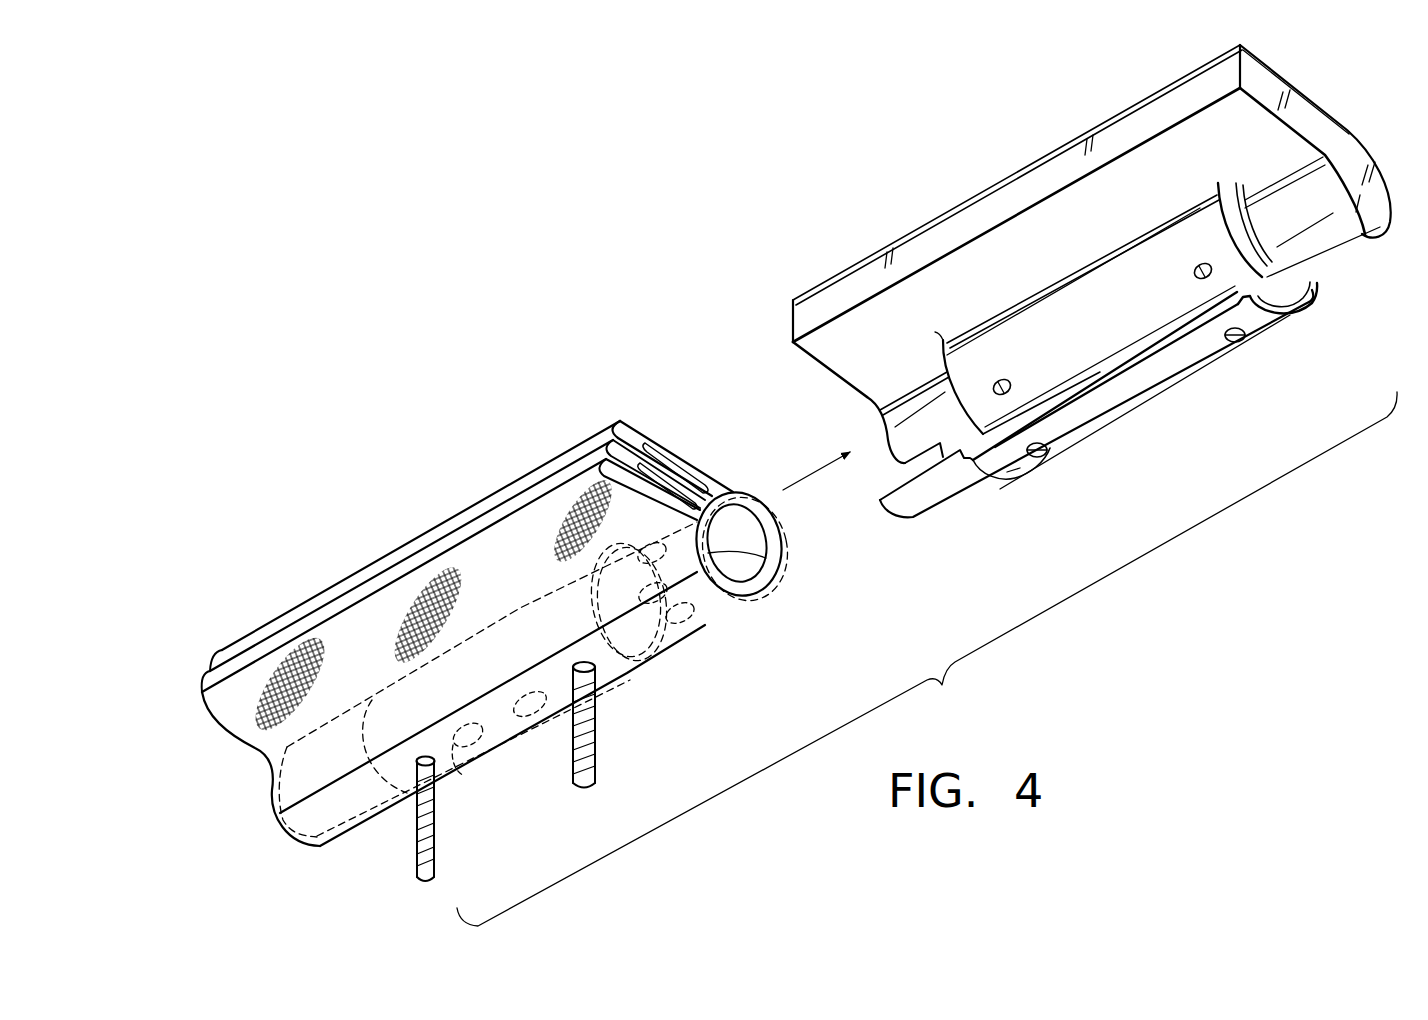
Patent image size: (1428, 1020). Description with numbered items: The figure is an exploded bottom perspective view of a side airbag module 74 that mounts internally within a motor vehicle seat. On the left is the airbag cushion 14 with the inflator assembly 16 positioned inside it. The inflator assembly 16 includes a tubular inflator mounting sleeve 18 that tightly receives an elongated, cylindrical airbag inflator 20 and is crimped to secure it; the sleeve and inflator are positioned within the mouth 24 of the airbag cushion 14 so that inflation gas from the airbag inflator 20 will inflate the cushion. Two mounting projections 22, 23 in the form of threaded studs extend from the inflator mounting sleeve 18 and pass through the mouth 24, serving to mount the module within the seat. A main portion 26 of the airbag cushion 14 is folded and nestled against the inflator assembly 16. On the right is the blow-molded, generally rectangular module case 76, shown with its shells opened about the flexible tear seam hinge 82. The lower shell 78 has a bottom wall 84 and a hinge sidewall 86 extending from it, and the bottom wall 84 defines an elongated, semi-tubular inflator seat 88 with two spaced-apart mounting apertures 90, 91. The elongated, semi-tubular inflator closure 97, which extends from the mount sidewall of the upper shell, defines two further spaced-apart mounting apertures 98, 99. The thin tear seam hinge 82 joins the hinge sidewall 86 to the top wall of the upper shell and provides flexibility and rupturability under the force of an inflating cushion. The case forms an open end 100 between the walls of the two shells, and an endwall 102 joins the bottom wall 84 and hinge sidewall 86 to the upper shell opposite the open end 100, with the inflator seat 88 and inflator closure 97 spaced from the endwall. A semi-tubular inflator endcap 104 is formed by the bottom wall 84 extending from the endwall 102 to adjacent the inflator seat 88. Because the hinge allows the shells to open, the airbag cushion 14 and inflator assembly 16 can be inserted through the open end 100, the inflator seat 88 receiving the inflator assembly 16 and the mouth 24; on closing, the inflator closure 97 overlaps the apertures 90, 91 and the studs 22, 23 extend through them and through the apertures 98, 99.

The inflatable airbag cushion 14 is at (502, 651).
The inflator assembly 16 is at (508, 722).
The inflator mounting sleeve 18 is at (460, 768).
The airbag inflator 20 is at (300, 846).
The mounting projection 22 is at (598, 725).
The mounting projection 23 is at (420, 846).
The mouth 24 is at (760, 578).
The main portion 26 is at (550, 460).
The side airbag module 74 is at (927, 659).
The module case 76 is at (1062, 289).
The lower shell 78 is at (1016, 172).
The tear seam hinge 82 is at (998, 183).
The bottom wall 84 is at (868, 393).
The hinge sidewall 86 is at (860, 270).
The inflator seat 88 is at (897, 450).
The mounting aperture 90 is at (1194, 272).
The mounting aperture 91 is at (1000, 380).
The inflator closure 97 is at (945, 503).
The mounting aperture 98 is at (1233, 345).
The mounting aperture 99 is at (1046, 458).
The open end 100 is at (792, 320).
The endwall 102 is at (1323, 123).
The inflator endcap 104 is at (1333, 257).